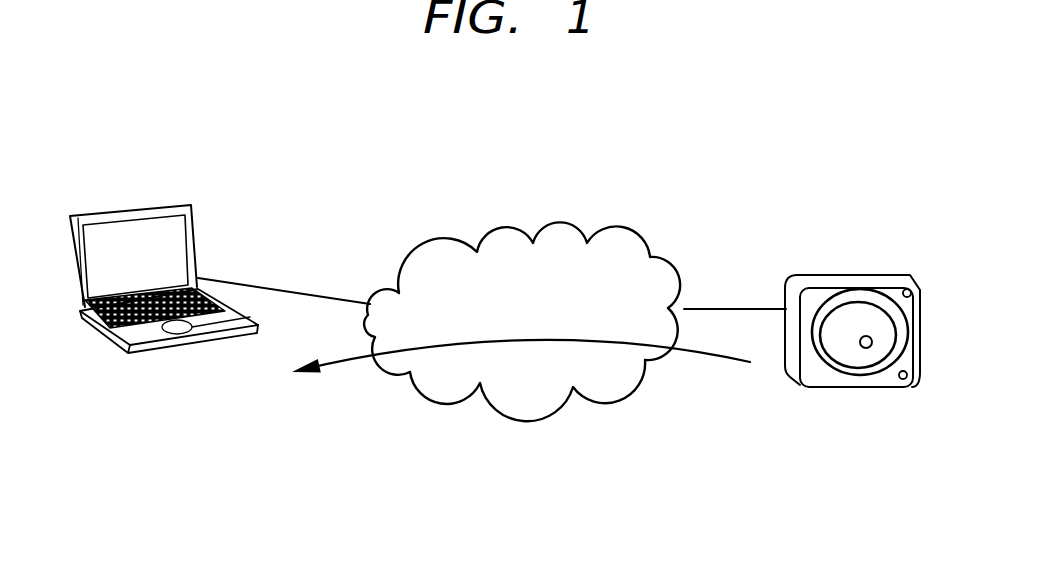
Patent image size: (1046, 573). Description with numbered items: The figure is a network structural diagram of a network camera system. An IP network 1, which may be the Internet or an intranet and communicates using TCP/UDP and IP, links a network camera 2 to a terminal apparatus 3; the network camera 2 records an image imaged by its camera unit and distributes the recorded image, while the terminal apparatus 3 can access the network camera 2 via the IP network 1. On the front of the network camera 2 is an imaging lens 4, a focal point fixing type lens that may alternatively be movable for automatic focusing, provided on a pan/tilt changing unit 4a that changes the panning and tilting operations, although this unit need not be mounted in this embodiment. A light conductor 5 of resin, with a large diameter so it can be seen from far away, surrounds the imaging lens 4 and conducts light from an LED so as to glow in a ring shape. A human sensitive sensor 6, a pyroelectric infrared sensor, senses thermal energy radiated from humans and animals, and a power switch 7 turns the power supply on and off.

The IP network 1 is at (557, 222).
The network camera 2 is at (856, 266).
The terminal apparatus 3 is at (170, 192).
The imaging lens 4 is at (867, 348).
The pan/tilt changing unit 4a is at (845, 313).
The light conductor 5 is at (813, 378).
The human sensitive sensor 6 is at (903, 380).
The power switch 7 is at (909, 290).